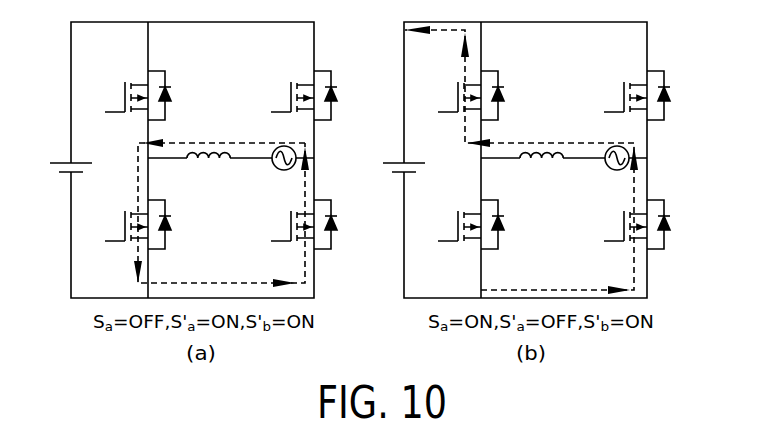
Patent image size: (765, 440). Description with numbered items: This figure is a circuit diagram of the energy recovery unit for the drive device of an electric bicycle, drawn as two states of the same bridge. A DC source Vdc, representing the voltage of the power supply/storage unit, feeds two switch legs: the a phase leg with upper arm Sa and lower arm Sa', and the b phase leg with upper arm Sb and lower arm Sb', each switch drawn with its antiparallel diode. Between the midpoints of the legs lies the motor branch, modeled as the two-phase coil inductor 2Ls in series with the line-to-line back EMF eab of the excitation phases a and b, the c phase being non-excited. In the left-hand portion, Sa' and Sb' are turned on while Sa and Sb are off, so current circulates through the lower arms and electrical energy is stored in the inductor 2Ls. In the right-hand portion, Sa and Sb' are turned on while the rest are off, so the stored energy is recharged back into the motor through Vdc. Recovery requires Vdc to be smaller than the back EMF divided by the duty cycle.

The upper arm switch of a phase Sa is at (135, 95).
The upper arm switch of b phase Sb is at (301, 95).
The lower arm switch of a phase Sa' is at (135, 224).
The lower arm switch of b phase Sb' is at (301, 224).
The voltage of the power supply/storage unit Vdc is at (53, 170).
The two-phase coil inductor 2Ls is at (208, 139).
The line-to-line back electromotive force eab is at (274, 143).